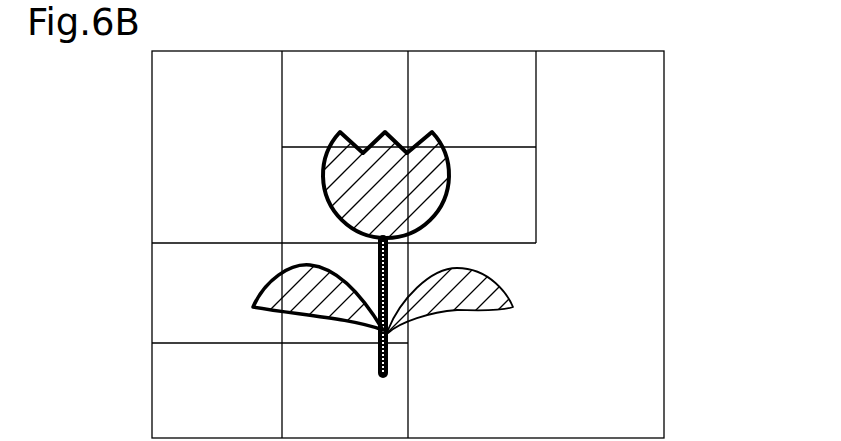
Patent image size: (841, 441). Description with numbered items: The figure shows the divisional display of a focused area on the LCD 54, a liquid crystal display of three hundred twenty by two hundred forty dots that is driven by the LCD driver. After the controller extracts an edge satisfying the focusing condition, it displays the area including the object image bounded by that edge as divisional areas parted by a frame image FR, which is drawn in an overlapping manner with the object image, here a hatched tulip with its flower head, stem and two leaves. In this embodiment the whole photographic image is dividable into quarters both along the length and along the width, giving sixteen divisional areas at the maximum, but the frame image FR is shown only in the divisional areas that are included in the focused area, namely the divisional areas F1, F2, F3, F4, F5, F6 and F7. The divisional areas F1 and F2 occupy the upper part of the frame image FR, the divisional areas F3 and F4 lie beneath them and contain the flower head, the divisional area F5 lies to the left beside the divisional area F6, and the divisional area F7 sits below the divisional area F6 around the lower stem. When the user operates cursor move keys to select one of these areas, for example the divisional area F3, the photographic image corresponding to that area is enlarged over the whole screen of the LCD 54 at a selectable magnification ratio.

The LCD 54 is at (664, 107).
The frame image FR is at (536, 115).
The divisional area F1 is at (345, 99).
The divisional area F2 is at (472, 99).
The divisional area F3 is at (345, 195).
The divisional area F4 is at (472, 195).
The divisional area F5 is at (217, 293).
The divisional area F6 is at (345, 293).
The divisional area F7 is at (345, 390).